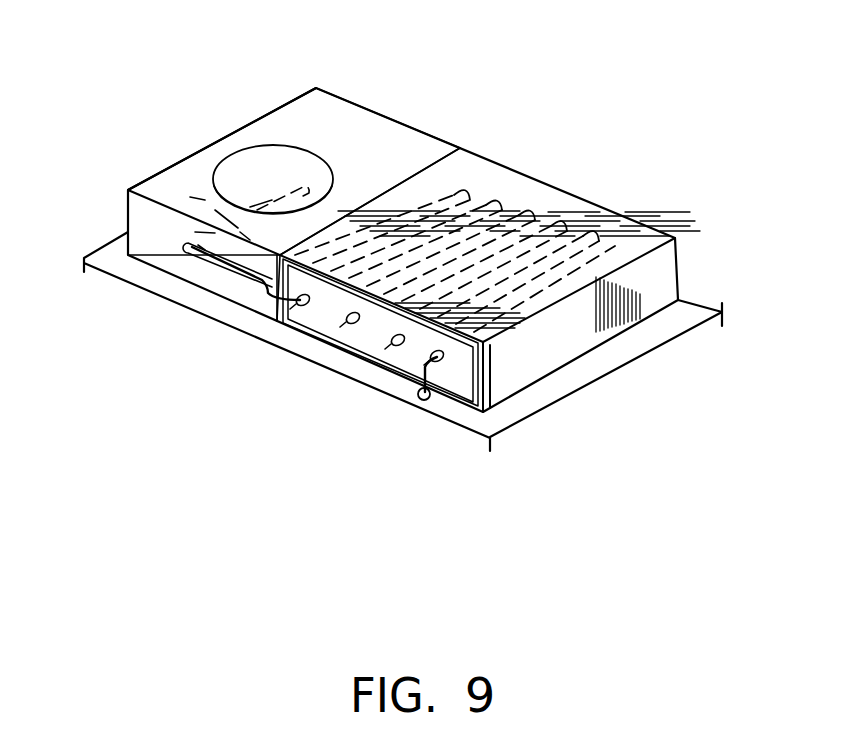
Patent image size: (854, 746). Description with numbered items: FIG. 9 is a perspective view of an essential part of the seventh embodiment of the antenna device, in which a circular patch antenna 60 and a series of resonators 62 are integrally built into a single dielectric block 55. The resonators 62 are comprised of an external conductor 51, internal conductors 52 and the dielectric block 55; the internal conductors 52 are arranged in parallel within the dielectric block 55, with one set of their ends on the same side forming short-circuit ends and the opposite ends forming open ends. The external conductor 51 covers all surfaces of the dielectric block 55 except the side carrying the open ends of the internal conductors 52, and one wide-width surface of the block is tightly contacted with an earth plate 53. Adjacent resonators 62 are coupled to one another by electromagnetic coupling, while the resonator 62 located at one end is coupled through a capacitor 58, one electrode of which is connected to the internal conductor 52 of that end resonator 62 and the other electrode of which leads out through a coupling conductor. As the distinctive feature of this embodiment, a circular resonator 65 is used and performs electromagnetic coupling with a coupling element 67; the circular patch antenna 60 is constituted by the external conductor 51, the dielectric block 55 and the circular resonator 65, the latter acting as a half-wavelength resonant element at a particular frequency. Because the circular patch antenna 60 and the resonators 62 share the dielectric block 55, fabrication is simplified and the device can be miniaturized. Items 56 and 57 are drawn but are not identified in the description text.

The external conductor 51 is at (610, 218).
The internal conductors 52 is at (300, 308).
The earth plate 53 is at (688, 312).
The dielectric block 55 is at (415, 143).
The lead wire 56 is at (410, 328).
The eyelet terminal 57 is at (436, 400).
The capacitor 58 is at (250, 337).
The circular patch antenna 60 is at (305, 125).
The resonators 62 is at (470, 208).
The circular resonator 65 is at (258, 165).
The coupling element 67 is at (180, 170).